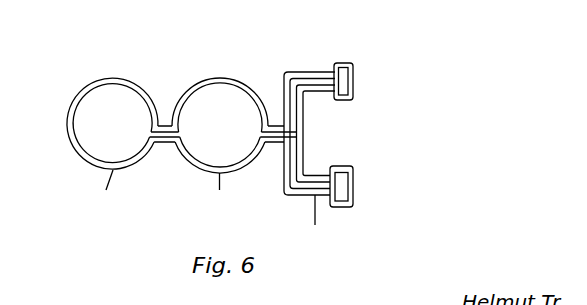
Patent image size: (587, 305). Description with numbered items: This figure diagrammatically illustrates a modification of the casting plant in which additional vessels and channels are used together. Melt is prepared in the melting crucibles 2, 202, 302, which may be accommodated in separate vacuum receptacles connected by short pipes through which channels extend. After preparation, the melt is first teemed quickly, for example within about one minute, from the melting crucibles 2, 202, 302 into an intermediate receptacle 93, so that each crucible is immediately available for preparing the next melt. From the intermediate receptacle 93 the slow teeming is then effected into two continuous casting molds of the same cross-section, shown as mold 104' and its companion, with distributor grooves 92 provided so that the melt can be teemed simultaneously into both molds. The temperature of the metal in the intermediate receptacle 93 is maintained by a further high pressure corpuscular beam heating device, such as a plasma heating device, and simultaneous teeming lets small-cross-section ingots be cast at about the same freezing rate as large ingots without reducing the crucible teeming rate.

The melting crucible 2 is at (117, 112).
The melting crucible 202 is at (117, 112).
The melting crucible 302 is at (118, 80).
The intermediate receptacle 93 is at (221, 82).
The distributor groove 92 is at (300, 130).
The continuous casting mold 104' is at (428, 81).